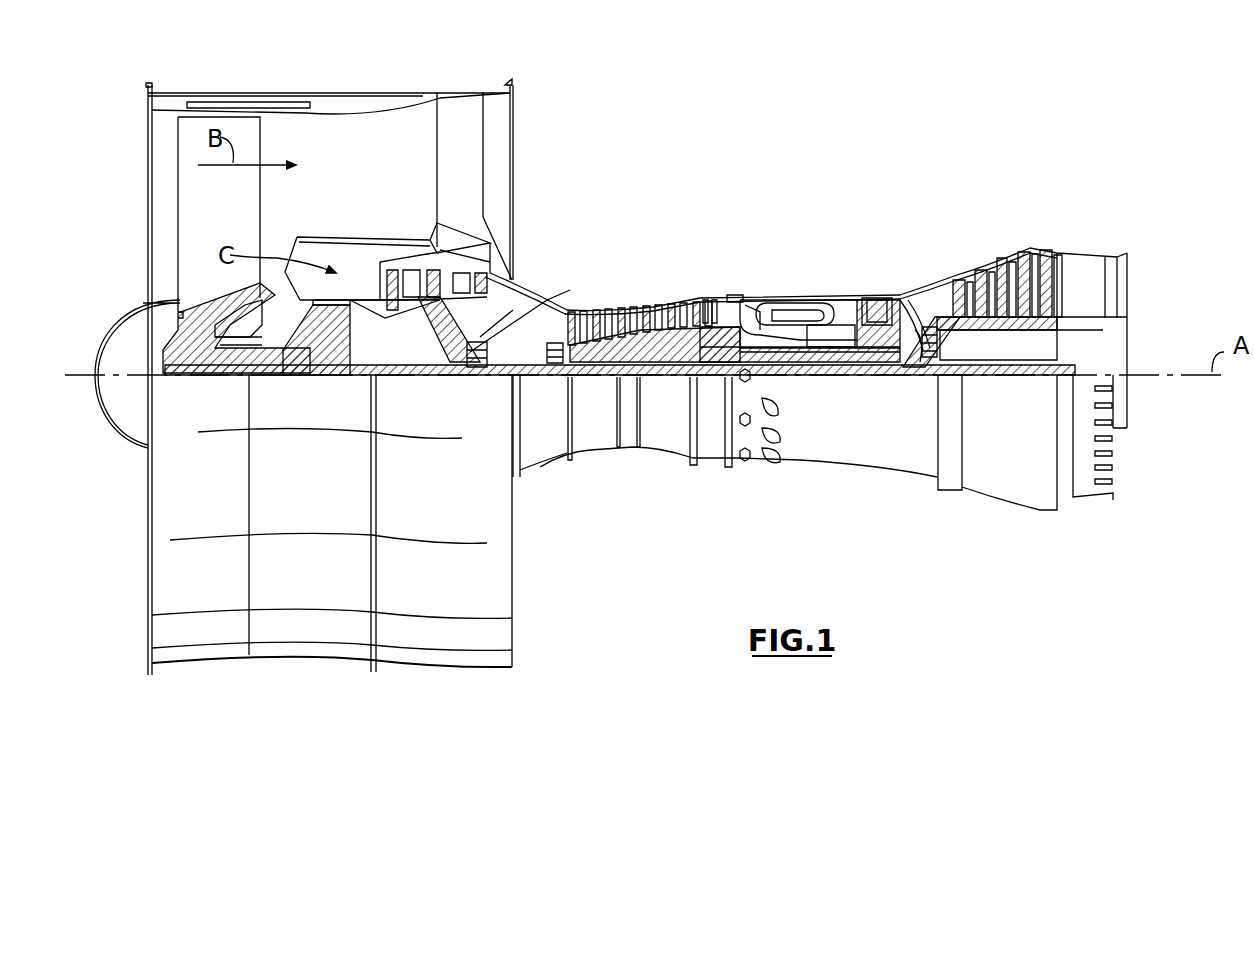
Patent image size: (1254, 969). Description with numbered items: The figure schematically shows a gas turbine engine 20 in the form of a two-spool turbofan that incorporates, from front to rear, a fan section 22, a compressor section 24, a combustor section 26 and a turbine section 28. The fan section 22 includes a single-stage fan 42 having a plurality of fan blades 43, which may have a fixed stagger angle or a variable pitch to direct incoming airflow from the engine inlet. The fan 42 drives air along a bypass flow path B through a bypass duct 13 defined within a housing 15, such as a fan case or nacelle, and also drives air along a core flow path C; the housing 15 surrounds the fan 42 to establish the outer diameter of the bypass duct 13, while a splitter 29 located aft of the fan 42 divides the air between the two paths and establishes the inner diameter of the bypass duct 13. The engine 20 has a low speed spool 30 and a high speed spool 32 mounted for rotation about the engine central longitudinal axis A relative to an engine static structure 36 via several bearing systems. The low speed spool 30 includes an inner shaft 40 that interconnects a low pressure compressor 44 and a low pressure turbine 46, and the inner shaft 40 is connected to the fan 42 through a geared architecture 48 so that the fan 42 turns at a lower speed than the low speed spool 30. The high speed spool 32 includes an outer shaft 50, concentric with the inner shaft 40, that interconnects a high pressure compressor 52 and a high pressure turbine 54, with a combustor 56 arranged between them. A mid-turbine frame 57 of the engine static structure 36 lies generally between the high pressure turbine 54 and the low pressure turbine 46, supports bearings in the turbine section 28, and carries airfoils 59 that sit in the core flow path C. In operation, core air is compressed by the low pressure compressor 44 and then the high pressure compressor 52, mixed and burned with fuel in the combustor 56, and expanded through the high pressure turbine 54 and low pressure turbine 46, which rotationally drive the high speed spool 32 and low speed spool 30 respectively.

The bypass duct 13 is at (382, 120).
The housing 15 is at (332, 93).
The gas turbine engine 20 is at (787, 146).
The fan section 22 is at (262, 84).
The compressor section 24 is at (562, 281).
The combustor section 26 is at (786, 270).
The turbine section 28 is at (959, 233).
The splitter 29 is at (307, 232).
The low speed spool 30 is at (668, 379).
The high speed spool 32 is at (710, 313).
The engine static structure 36 is at (711, 465).
The inner shaft 40 is at (535, 377).
The fan 42 is at (205, 221).
The fan blades 43 is at (247, 220).
The low pressure compressor 44 is at (433, 280).
The low pressure turbine 46 is at (1003, 268).
The geared architecture 48 is at (338, 360).
The outer shaft 50 is at (782, 357).
The high pressure compressor 52 is at (648, 308).
The high pressure turbine 54 is at (862, 293).
The combustor 56 is at (786, 315).
The mid-turbine frame 57 is at (920, 283).
The airfoils 59 is at (938, 338).